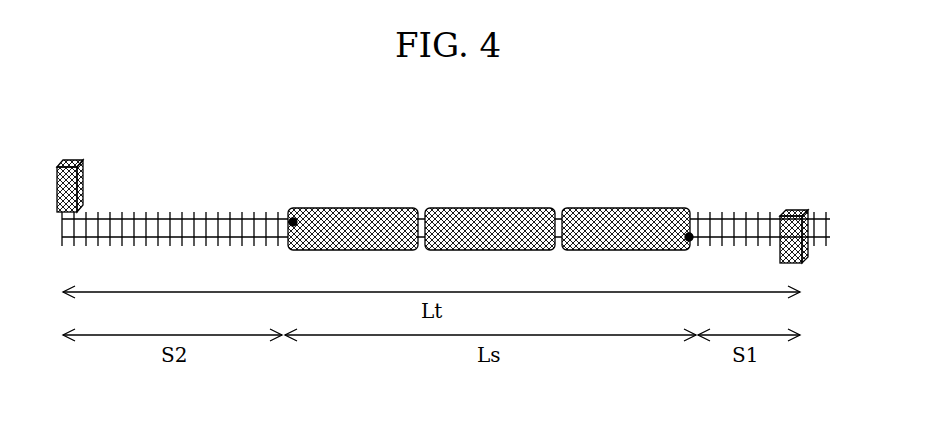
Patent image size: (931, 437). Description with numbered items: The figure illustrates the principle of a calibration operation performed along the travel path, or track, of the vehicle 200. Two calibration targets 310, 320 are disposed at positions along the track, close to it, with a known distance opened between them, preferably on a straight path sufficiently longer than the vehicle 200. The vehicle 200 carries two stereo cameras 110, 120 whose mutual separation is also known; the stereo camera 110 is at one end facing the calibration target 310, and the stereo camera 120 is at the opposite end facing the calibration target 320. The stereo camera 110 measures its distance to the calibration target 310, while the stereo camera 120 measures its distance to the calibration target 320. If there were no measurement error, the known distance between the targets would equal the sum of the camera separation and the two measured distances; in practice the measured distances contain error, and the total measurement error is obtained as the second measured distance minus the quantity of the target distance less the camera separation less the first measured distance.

The stereo camera 110 is at (688, 233).
The stereo camera 120 is at (293, 218).
The vehicle 200 is at (485, 207).
The calibration target 310 is at (796, 209).
The calibration target 320 is at (71, 160).